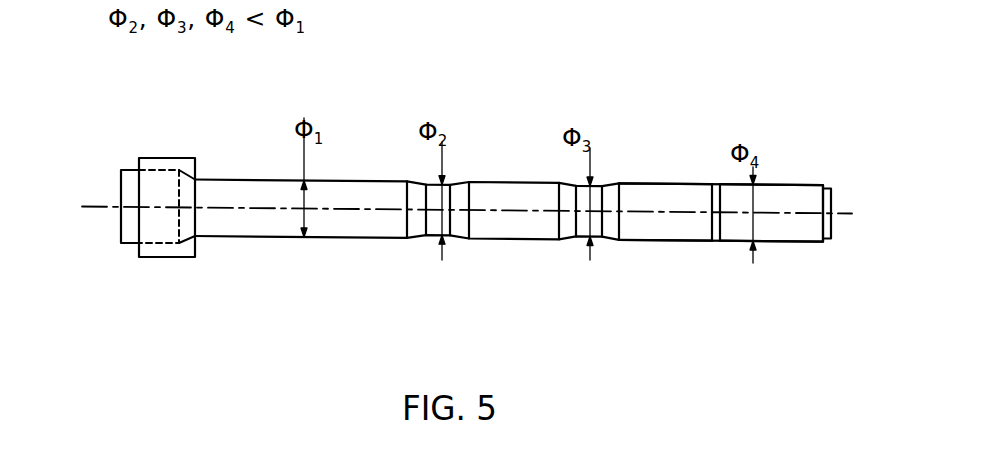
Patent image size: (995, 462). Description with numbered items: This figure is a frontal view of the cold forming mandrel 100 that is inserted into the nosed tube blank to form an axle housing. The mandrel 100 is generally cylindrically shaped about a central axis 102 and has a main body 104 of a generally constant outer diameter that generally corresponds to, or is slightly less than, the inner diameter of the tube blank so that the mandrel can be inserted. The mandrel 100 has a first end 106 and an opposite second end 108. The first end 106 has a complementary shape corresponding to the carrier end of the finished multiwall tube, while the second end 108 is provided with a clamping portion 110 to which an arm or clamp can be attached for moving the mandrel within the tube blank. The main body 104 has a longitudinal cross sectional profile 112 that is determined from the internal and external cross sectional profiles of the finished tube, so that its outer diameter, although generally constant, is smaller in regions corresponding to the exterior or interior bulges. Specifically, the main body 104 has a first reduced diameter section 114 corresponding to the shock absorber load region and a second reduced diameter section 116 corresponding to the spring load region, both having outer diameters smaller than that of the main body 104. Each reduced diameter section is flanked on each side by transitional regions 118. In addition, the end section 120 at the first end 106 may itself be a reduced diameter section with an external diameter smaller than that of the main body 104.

The mandrel 100 is at (728, 128).
The central axis 102 is at (98, 202).
The main body 104 is at (813, 258).
The first end 106 is at (775, 198).
The second end 108 is at (167, 233).
The clamping portion 110 is at (148, 231).
The longitudinal cross sectional profile 112 is at (663, 244).
The first reduced diameter section 114 is at (448, 182).
The second reduced diameter section 116 is at (598, 182).
The transitional regions 118 is at (408, 180).
The end section 120 is at (808, 244).